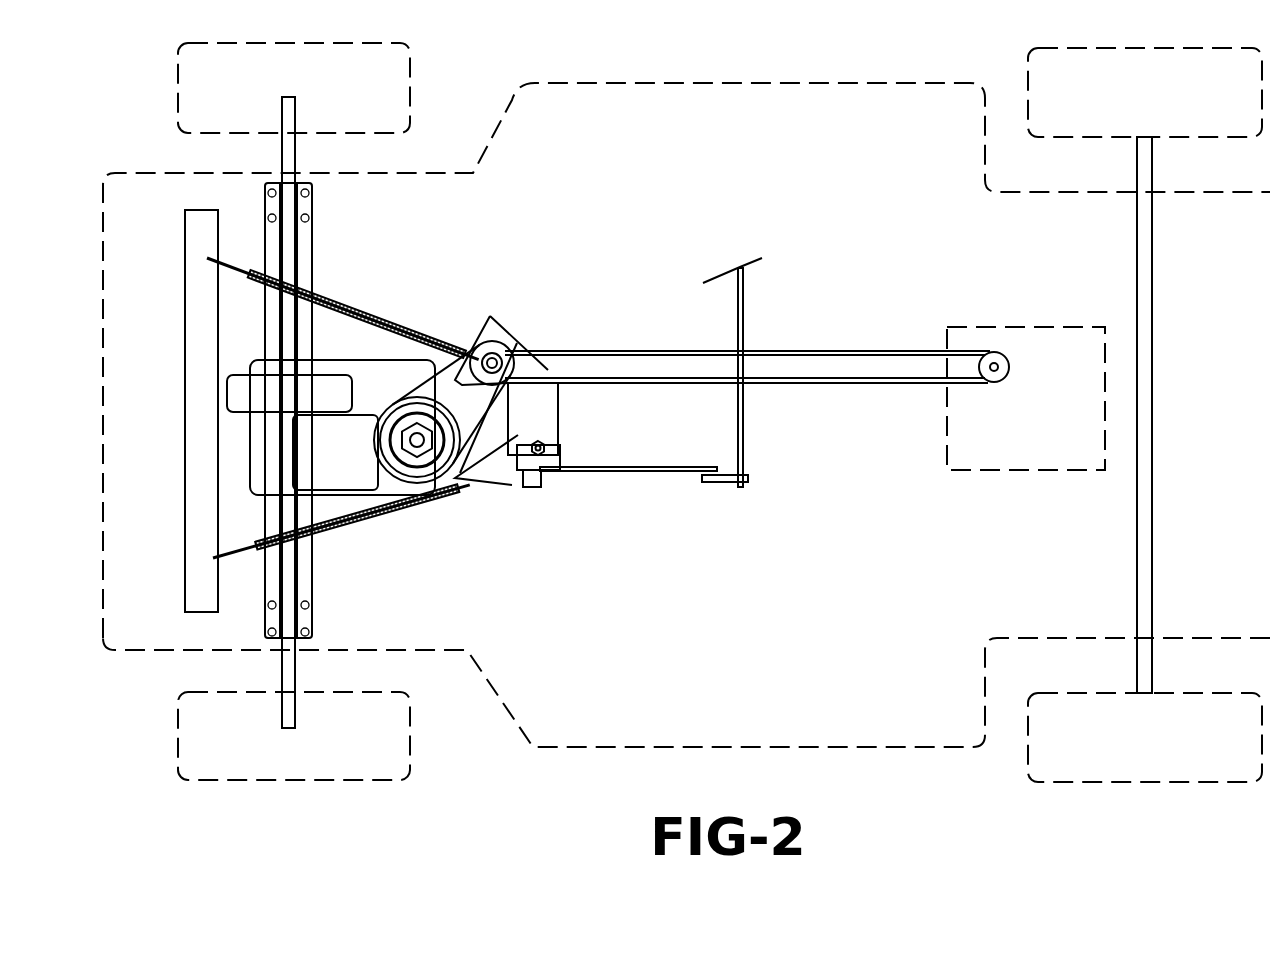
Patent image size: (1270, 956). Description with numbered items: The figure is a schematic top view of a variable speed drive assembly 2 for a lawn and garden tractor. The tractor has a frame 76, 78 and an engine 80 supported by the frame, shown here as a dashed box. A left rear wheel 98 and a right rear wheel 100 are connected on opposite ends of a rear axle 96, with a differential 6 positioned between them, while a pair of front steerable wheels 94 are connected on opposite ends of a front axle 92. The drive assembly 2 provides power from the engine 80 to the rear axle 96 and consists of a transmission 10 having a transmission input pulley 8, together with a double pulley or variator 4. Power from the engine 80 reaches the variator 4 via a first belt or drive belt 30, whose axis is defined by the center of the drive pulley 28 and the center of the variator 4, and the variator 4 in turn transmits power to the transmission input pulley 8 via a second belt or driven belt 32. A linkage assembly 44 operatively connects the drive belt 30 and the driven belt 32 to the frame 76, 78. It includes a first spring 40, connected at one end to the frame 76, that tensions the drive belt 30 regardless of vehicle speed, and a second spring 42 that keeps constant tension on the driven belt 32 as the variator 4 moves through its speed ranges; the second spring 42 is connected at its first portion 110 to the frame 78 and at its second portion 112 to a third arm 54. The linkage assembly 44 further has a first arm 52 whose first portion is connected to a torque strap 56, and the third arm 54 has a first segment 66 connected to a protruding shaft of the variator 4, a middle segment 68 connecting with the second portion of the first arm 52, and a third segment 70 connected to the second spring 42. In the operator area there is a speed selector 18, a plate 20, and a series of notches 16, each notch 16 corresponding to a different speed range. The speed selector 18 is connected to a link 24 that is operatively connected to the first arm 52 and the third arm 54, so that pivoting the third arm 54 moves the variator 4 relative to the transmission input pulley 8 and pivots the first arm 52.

The variable speed drive assembly 2 is at (510, 148).
The variator 4 is at (490, 350).
The differential 6 is at (240, 388).
The transmission input pulley 8 is at (455, 478).
The transmission 10 is at (333, 497).
The notches 16 is at (715, 490).
The speed selector 18 is at (752, 438).
The plate 20 is at (727, 482).
The link 24 is at (640, 470).
The drive pulley 28 is at (995, 385).
The drive belt 30 is at (883, 337).
The driven belt 32 is at (420, 388).
The first spring 40 is at (257, 287).
The second spring 42 is at (262, 535).
The linkage assembly 44 is at (525, 505).
The first arm 52 is at (505, 458).
The third arm 54 is at (533, 400).
The torque strap 56 is at (490, 443).
The first segment 66 is at (502, 337).
The middle segment 68 is at (558, 385).
The third segment 70 is at (543, 470).
The frame 76 is at (178, 262).
The frame 78 is at (195, 543).
The engine 80 is at (1043, 325).
The front axle 92 is at (1148, 222).
The front steerable wheels 94 is at (1065, 75).
The rear axle 96 is at (292, 155).
The left rear wheel 98 is at (365, 57).
The right rear wheel 100 is at (330, 768).
The first portion 110 is at (213, 560).
The second portion 112 is at (542, 466).